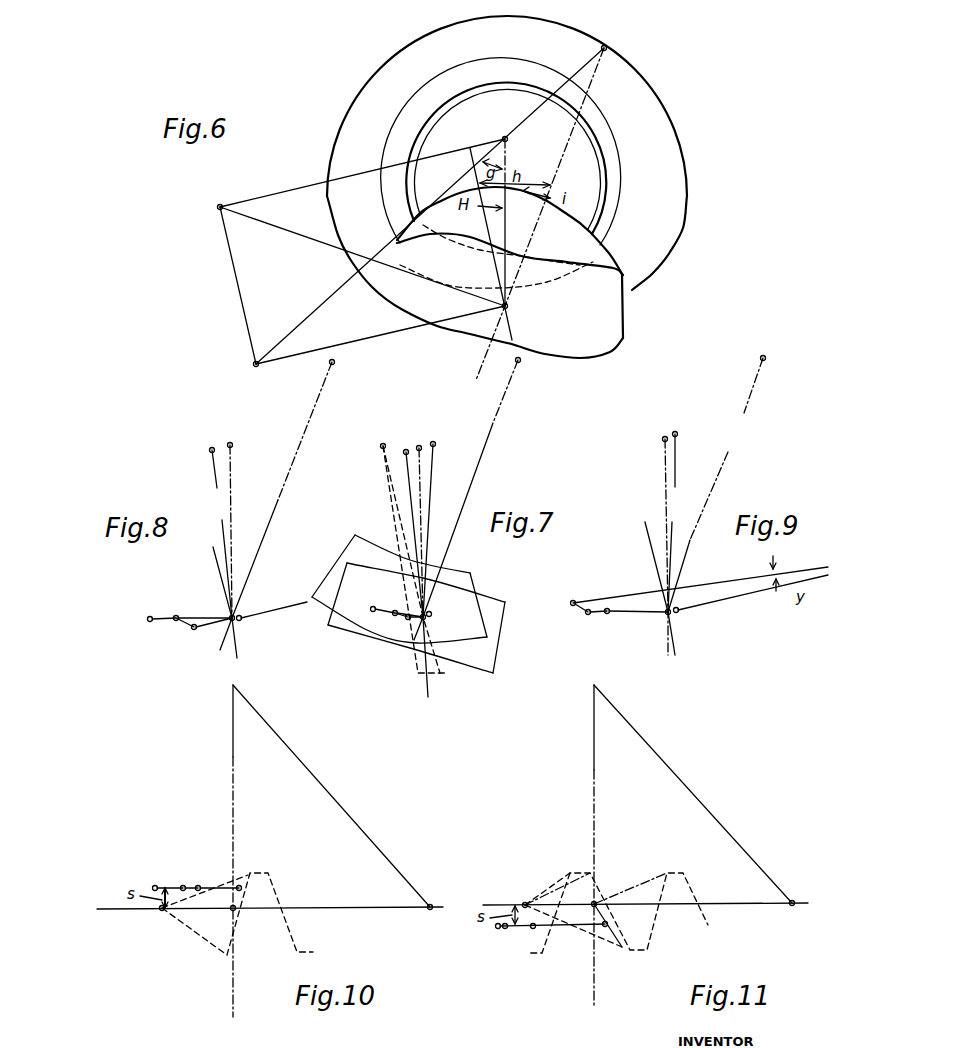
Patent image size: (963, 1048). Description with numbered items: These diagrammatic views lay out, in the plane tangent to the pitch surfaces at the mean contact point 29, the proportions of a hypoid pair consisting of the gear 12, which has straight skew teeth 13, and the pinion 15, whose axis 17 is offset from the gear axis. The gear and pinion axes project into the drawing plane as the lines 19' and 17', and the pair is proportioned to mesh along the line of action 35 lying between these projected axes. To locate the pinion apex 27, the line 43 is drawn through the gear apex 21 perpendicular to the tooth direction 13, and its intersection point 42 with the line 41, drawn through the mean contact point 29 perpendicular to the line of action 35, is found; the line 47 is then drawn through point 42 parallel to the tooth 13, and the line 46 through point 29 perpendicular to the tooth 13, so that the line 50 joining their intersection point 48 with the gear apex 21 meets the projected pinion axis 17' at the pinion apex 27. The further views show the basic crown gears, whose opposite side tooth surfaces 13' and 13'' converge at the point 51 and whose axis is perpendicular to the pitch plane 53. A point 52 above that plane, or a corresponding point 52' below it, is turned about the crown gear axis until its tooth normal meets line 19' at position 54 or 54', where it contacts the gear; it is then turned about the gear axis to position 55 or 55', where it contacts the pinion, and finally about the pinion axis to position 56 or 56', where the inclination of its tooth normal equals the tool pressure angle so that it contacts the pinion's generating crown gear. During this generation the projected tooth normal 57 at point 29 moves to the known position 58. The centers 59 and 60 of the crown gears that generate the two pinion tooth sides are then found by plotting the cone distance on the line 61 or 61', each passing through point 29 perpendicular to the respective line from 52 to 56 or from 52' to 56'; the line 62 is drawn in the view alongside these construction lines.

In FIG. 6, the gear 12 is at (686, 168).
In FIG. 7, the gear 12 is at (468, 586).
In FIG. 6, the teeth 13 is at (484, 244).
In FIG. 7, the teeth 13 is at (426, 664).
In FIG. 8, the teeth 13 is at (233, 603).
In FIG. 9, the teeth 13 is at (663, 593).
In FIG. 7, the one side tooth surface of the basic crown gears 13' is at (405, 685).
In FIG. 10, the one side tooth surface of the basic crown gears 13' is at (229, 921).
In FIG. 11, the one side tooth surface of the basic crown gears 13' is at (601, 919).
In FIG. 7, the opposite side tooth surface of the basic crown gears 13'' is at (465, 686).
In FIG. 11, the opposite side tooth surface of the basic crown gears 13'' is at (592, 943).
In FIG. 6, the pinion 15 is at (612, 347).
In FIG. 7, the pinion 15 is at (492, 654).
In FIG. 10, the pinion axis 17 is at (331, 851).
In FIG. 11, the pinion axis 17 is at (693, 846).
In FIG. 6, the projection of the pinion axis 17' is at (540, 214).
In FIG. 7, the projection of the pinion axis 17' is at (466, 500).
In FIG. 8, the projection of the pinion axis 17' is at (276, 506).
In FIG. 9, the projection of the pinion axis 17' is at (723, 485).
In FIG. 6, the projection of the gear axis 19' is at (528, 222).
In FIG. 8, the projection of the gear axis 19' is at (250, 531).
In FIG. 9, the projection of the gear axis 19' is at (648, 547).
In FIG. 6, the gear apex 21 is at (508, 139).
In FIG. 7, the gear apex 21 is at (420, 445).
In FIG. 8, the gear apex 21 is at (232, 444).
In FIG. 9, the gear apex 21 is at (663, 438).
In FIG. 6, the pinion apex 27 is at (607, 47).
In FIG. 7, the pinion apex 27 is at (520, 362).
In FIG. 8, the pinion apex 27 is at (334, 364).
In FIG. 9, the pinion apex 27 is at (766, 357).
In FIG. 10, the pinion apex 27 is at (429, 910).
In FIG. 11, the pinion apex 27 is at (790, 906).
In FIG. 6, the mean contact point 29 is at (509, 306).
In FIG. 7, the mean contact point 29 is at (430, 620).
In FIG. 8, the mean contact point 29 is at (230, 622).
In FIG. 9, the mean contact point 29 is at (666, 616).
In FIG. 10, the mean contact point 29 is at (237, 912).
In FIG. 11, the mean contact point 29 is at (592, 908).
In FIG. 6, the line of action 35 is at (533, 241).
In FIG. 6, the line 41 is at (302, 235).
In FIG. 6, the intersection point 42 is at (217, 207).
In FIG. 6, the line 43 is at (280, 193).
In FIG. 6, the line 46 is at (384, 335).
In FIG. 6, the line 47 is at (240, 300).
In FIG. 6, the intersection point 48 is at (255, 367).
In FIG. 6, the line 50 is at (341, 289).
In FIG. 7, the point of convergence 51 is at (380, 447).
In FIG. 10, the point of convergence 51 is at (160, 912).
In FIG. 11, the point of convergence 51 is at (525, 902).
In FIG. 7, the point on the tooth of the crown gear 52 is at (448, 607).
In FIG. 8, the point on the tooth of the crown gear 52 is at (272, 606).
In FIG. 10, the point on the tooth of the crown gear 52 is at (248, 870).
In FIG. 9, the point on the tooth of the crown gear 52' is at (696, 599).
In FIG. 11, the point on the tooth of the crown gear 52' is at (563, 952).
In FIG. 10, the pitch plane of the crown gear 53 is at (97, 909).
In FIG. 11, the pitch plane of the crown gear 53 is at (800, 905).
In FIG. 8, the position 54 is at (144, 616).
In FIG. 10, the position 54 is at (156, 877).
In FIG. 9, the position 54' is at (634, 625).
In FIG. 7, the position 55 is at (397, 601).
In FIG. 8, the position 55 is at (202, 608).
In FIG. 10, the position 55 is at (180, 875).
In FIG. 9, the position 55' is at (585, 630).
In FIG. 7, the position 56 is at (403, 631).
In FIG. 8, the position 56 is at (201, 637).
In FIG. 10, the position 56 is at (218, 876).
In FIG. 9, the position 56' is at (566, 616).
In FIG. 9, the projection of the tooth normal 57 is at (747, 593).
In FIG. 9, the position of the tooth normal 58 is at (690, 588).
In FIG. 7, the center of the crown gear 59 is at (405, 449).
In FIG. 8, the center of the crown gear 59 is at (209, 449).
In FIG. 7, the center of the crown gear 60 is at (435, 443).
In FIG. 9, the center of the crown gear 60 is at (677, 433).
In FIG. 7, the line 61 is at (406, 534).
In FIG. 8, the line 61 is at (209, 534).
In FIG. 7, the line 61' is at (446, 530).
In FIG. 9, the line 62 is at (676, 480).